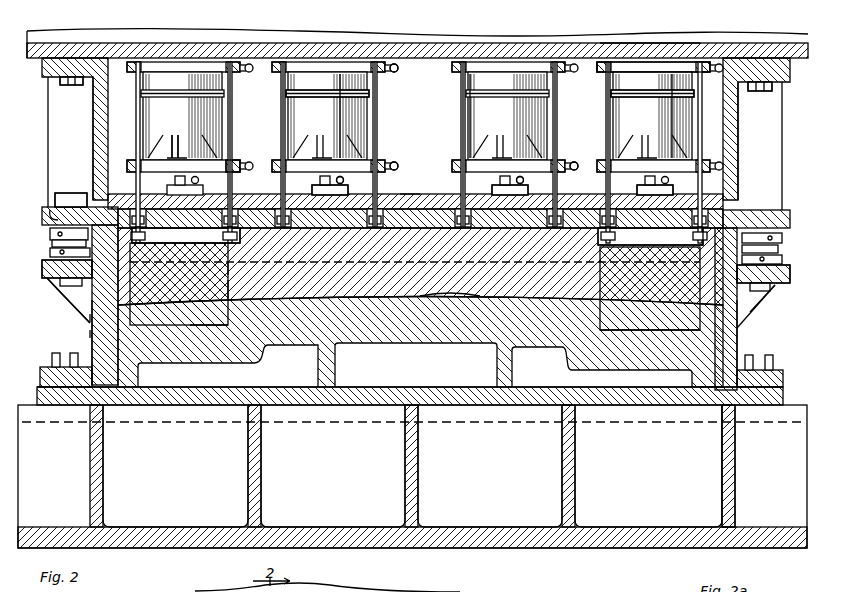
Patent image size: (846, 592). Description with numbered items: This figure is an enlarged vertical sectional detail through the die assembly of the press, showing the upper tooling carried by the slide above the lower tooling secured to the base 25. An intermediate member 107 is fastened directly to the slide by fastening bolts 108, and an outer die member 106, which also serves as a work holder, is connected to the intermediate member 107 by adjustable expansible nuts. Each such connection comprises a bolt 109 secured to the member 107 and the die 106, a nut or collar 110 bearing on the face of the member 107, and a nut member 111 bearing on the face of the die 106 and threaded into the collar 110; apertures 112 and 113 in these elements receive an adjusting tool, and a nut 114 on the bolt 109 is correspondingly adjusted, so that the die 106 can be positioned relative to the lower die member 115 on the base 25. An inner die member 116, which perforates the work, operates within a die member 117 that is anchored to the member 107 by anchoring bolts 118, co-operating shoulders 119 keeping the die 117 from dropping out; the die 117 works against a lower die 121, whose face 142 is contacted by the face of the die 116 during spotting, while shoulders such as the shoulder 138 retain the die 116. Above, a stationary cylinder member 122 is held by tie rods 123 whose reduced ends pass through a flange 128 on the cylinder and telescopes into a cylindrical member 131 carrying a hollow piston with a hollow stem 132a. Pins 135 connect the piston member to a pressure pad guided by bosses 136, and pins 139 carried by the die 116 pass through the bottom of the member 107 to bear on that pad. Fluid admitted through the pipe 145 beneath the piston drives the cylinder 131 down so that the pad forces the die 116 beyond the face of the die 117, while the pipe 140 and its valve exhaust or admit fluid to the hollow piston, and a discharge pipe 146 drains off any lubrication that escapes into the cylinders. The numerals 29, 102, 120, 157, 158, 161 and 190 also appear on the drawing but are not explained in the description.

In FIG. 2, the base 25 is at (727, 490).
In FIG. 2, the top plate 29 is at (652, 56).
In FIG. 2a, the top plate 29 is at (628, 591).
In FIG. 2, the block 102 is at (200, 318).
In FIG. 2, the outer die member 106 is at (762, 93).
In FIG. 2, the intermediate member 107 is at (95, 125).
In FIG. 2, the fastening bolts 108 is at (75, 68).
In FIG. 2, the bolt 109 is at (70, 196).
In FIG. 2, the nut 110 is at (52, 239).
In FIG. 2, the nut member 111 is at (52, 256).
In FIG. 2, the aperture 112 is at (50, 217).
In FIG. 2, the aperture 113 is at (58, 283).
In FIG. 2, the nut 114 is at (88, 292).
In FIG. 2, the die member 115 is at (88, 392).
In FIG. 2, the inner die member 116 is at (232, 277).
In FIG. 2, the die member 117 is at (448, 218).
In FIG. 2, the anchoring bolts 118 is at (96, 286).
In FIG. 2, the co-operating shoulders 119 is at (90, 318).
In FIG. 2, the shoulder 120 is at (90, 334).
In FIG. 2, the die 121 is at (448, 290).
In FIG. 2, the stationary cylinder member 122 is at (664, 80).
In FIG. 2, the tie rods 123 is at (281, 112).
In FIG. 2, the flange 128 is at (611, 68).
In FIG. 2, the cylindrical member 131 is at (348, 113).
In FIG. 2, the hollow stem 132a is at (322, 182).
In FIG. 2, the pins 135 is at (232, 168).
In FIG. 2, the bosses 136 is at (182, 185).
In FIG. 2, the co-operating shoulder 138 is at (179, 284).
In FIG. 2, the pins 139 is at (214, 235).
In FIG. 2, the pipe 140 is at (350, 186).
In FIG. 2, the co-operating face 142 is at (620, 333).
In FIG. 2, the pipe 145 is at (392, 66).
In FIG. 2, the discharge pipe 146 is at (573, 162).
In FIG. 2, the step 157 is at (235, 268).
In FIG. 2, the pad 158 is at (408, 188).
In FIG. 2, the passage 161 is at (396, 222).
In FIG. 2, the bolt 190 is at (534, 185).